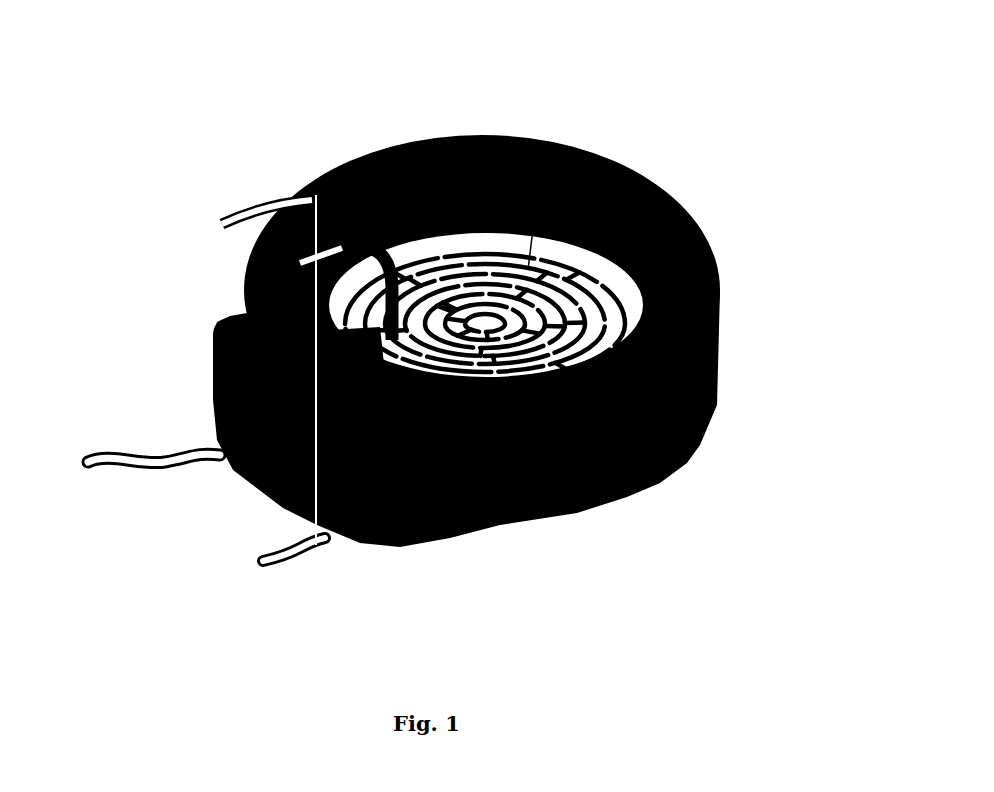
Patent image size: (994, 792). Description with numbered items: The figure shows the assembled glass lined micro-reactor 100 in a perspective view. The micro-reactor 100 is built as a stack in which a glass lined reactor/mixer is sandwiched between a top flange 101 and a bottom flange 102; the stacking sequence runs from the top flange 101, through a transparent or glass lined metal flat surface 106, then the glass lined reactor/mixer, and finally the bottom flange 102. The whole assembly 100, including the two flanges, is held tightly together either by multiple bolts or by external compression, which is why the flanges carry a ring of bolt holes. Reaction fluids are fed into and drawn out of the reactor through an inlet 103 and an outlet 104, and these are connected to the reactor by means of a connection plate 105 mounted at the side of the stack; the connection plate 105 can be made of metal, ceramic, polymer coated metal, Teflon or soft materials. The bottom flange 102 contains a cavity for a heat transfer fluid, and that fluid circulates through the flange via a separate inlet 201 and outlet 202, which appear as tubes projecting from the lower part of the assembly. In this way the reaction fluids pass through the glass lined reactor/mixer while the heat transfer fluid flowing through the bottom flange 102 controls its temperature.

The glass lined micro-reactor 100 is at (419, 282).
The top flange 101 is at (700, 255).
The bottom flange 102 is at (715, 393).
The inlet 103 is at (218, 225).
The outlet 104 is at (252, 258).
The connection plate 105 is at (240, 317).
The transparent or glass lined metal flat surface 106 is at (598, 163).
The inlet 201 is at (108, 447).
The outlet 202 is at (258, 557).